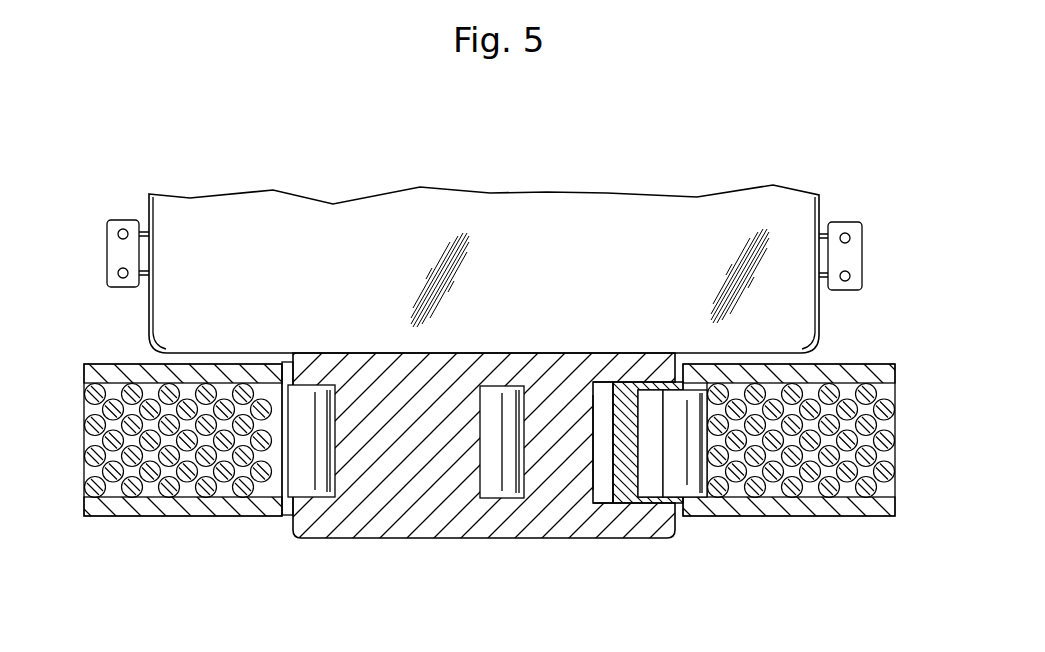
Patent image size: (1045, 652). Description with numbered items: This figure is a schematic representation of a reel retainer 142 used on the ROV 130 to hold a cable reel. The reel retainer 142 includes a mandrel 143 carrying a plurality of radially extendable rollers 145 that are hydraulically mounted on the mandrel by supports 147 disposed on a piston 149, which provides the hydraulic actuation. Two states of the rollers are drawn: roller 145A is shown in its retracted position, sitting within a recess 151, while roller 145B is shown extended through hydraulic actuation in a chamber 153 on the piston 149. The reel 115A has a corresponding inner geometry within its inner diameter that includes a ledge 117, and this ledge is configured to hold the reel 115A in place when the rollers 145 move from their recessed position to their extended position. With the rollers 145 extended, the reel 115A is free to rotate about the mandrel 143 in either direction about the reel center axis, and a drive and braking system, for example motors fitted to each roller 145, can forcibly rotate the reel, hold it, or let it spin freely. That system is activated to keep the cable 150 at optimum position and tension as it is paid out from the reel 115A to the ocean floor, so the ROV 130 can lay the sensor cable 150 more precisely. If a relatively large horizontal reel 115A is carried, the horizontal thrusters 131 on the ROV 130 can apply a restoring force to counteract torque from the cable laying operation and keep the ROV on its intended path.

The reel 115A is at (838, 365).
The ledge 117 is at (280, 380).
The ROV 130 is at (516, 225).
The horizontal thrusters 131 is at (121, 219).
The reel retainer 142 is at (497, 446).
The mandrel 143 is at (622, 525).
The radially extendable rollers 145 is at (498, 480).
The roller 145A is at (306, 458).
The roller 145B is at (694, 475).
The supports 147 is at (638, 505).
The piston 149 is at (600, 422).
The cable 150 is at (846, 502).
The recess 151 is at (649, 400).
The chamber 153 is at (597, 478).